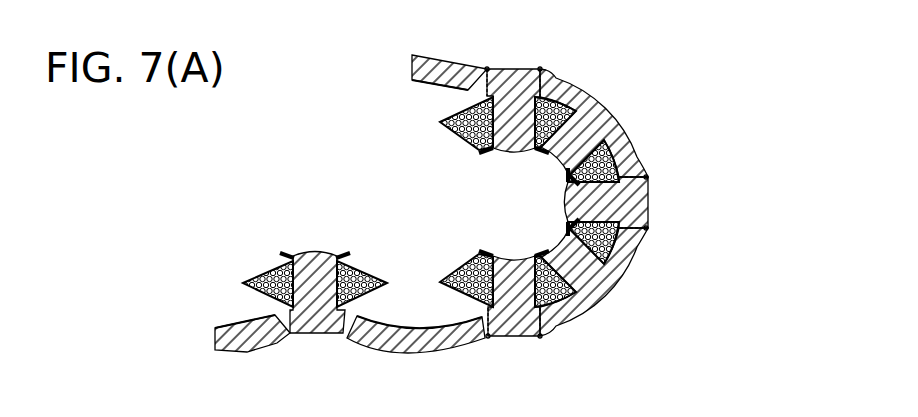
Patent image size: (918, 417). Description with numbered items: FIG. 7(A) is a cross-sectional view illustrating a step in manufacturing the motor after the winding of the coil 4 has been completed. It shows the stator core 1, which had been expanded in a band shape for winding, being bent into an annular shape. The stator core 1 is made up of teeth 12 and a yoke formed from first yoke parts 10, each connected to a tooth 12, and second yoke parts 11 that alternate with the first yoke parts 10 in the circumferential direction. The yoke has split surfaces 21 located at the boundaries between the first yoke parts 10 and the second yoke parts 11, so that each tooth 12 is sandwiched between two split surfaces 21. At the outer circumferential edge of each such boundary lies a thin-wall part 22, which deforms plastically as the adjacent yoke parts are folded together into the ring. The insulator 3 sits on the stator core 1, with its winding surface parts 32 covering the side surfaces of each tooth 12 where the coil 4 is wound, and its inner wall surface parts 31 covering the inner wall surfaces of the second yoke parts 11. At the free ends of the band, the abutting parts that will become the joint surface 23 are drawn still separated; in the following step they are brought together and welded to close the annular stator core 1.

The stator core 1 is at (610, 106).
The insulator 3 is at (598, 130).
The coil 4 is at (560, 110).
The first yoke part 10 is at (507, 67).
The second yoke part 11 is at (438, 64).
The tooth 12 is at (516, 92).
The split surface 21 is at (544, 71).
The thin-wall part 22 is at (486, 67).
The joint surface 23 is at (412, 58).
The inner wall surface part 31 is at (412, 80).
The winding surface part 32 is at (505, 152).